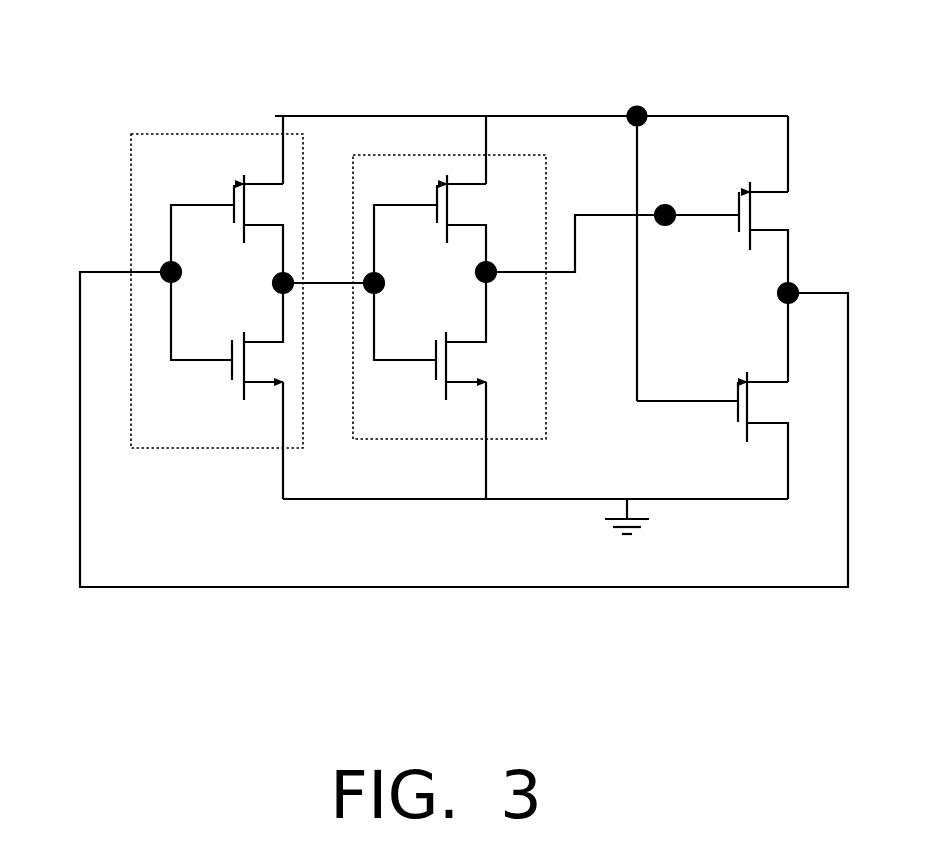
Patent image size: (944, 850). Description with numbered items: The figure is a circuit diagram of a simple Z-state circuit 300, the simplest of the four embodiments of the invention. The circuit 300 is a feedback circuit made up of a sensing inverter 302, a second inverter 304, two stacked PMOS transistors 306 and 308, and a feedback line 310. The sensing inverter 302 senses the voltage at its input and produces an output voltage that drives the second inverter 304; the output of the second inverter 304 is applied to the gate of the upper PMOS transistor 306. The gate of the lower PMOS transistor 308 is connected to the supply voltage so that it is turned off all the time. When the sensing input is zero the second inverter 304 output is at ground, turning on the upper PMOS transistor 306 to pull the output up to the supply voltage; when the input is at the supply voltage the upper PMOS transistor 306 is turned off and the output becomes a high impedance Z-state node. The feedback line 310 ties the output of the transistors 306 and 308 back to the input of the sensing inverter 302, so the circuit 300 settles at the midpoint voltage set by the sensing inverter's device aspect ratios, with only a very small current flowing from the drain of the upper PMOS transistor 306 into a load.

The simple Z-state circuit 300 is at (452, 36).
The sensing inverter 302 is at (131, 165).
The second inverter 304 is at (526, 155).
The upper PMOS transistor 306 is at (788, 190).
The lower PMOS transistor 308 is at (788, 382).
The feedback line 310 is at (384, 585).